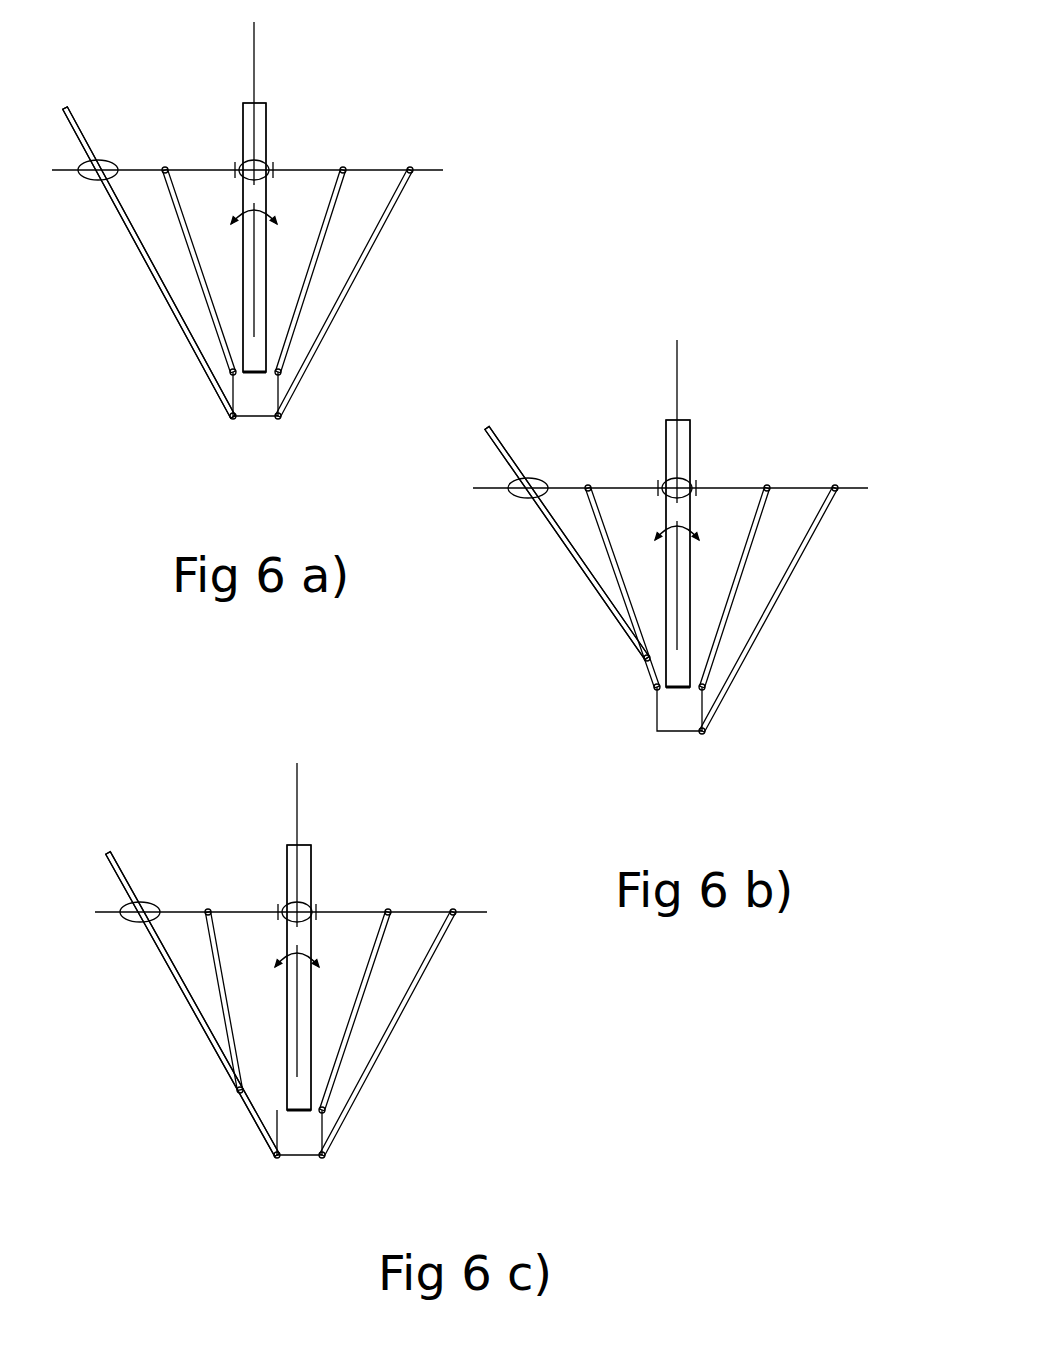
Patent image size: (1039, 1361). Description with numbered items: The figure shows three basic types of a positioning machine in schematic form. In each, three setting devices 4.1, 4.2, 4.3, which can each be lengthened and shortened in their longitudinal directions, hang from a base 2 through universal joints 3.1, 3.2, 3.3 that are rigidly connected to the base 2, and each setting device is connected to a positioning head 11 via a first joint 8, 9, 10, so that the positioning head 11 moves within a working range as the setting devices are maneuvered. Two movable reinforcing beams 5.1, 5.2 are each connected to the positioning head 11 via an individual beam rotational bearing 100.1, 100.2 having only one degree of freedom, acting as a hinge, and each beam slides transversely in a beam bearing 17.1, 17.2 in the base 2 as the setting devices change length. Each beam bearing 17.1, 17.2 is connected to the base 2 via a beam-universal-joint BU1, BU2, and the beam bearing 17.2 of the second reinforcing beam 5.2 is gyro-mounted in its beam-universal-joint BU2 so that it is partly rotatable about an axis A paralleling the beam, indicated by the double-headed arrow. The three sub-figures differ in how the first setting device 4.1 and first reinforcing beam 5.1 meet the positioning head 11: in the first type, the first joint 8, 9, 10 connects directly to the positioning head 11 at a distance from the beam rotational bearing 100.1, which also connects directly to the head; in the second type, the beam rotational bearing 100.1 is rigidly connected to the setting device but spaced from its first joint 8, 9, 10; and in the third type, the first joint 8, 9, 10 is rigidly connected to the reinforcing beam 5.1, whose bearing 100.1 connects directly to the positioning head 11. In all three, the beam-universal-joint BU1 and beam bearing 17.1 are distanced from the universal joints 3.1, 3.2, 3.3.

In FIG. 6a, the axis A is at (254, 53).
In FIG. 6b, the axis A is at (680, 370).
In FIG. 6c, the axis A is at (298, 793).
In FIG. 6a, the base 2 is at (435, 165).
In FIG. 6b, the base 2 is at (855, 490).
In FIG. 6c, the base 2 is at (477, 907).
In FIG. 6a, the universal joint 3.1 is at (162, 168).
In FIG. 6b, the universal joint 3.1 is at (585, 486).
In FIG. 6c, the universal joint 3.1 is at (205, 910).
In FIG. 6a, the universal joint 3.2 is at (343, 167).
In FIG. 6b, the universal joint 3.2 is at (767, 485).
In FIG. 6c, the universal joint 3.2 is at (388, 909).
In FIG. 6a, the universal joint 3.3 is at (411, 167).
In FIG. 6b, the universal joint 3.3 is at (836, 485).
In FIG. 6c, the universal joint 3.3 is at (454, 909).
In FIG. 6a, the first setting device 4.1 is at (187, 245).
In FIG. 6b, the first setting device 4.1 is at (612, 562).
In FIG. 6c, the first setting device 4.1 is at (222, 990).
In FIG. 6a, the second setting device 4.2 is at (327, 217).
In FIG. 6b, the second setting device 4.2 is at (755, 537).
In FIG. 6c, the second setting device 4.2 is at (373, 958).
In FIG. 6a, the third setting device 4.3 is at (348, 292).
In FIG. 6b, the third setting device 4.3 is at (773, 607).
In FIG. 6c, the third setting device 4.3 is at (392, 1030).
In FIG. 6a, the first reinforcing beam 5.1 is at (125, 220).
In FIG. 6b, the first reinforcing beam 5.1 is at (557, 533).
In FIG. 6c, the first reinforcing beam 5.1 is at (167, 963).
In FIG. 6a, the second reinforcing beam 5.2 is at (255, 132).
In FIG. 6b, the second reinforcing beam 5.2 is at (682, 448).
In FIG. 6c, the second reinforcing beam 5.2 is at (300, 873).
In FIG. 6a, the first joint 8 is at (258, 405).
In FIG. 6b, the first joint 8 is at (680, 718).
In FIG. 6c, the first joint 8 is at (301, 1137).
In FIG. 6a, the first joint 9 is at (258, 405).
In FIG. 6b, the first joint 9 is at (680, 718).
In FIG. 6c, the first joint 9 is at (301, 1137).
In FIG. 6a, the first joint 10 is at (233, 373).
In FIG. 6b, the first joint 10 is at (657, 688).
In FIG. 6c, the first joint 10 is at (238, 1093).
In FIG. 6a, the positioning head 11 is at (260, 407).
In FIG. 6b, the positioning head 11 is at (685, 720).
In FIG. 6c, the positioning head 11 is at (305, 1145).
In FIG. 6a, the beam bearing 17.1 is at (92, 182).
In FIG. 6b, the beam bearing 17.1 is at (527, 502).
In FIG. 6c, the beam bearing 17.1 is at (142, 925).
In FIG. 6a, the beam bearing 17.2 is at (237, 163).
In FIG. 6b, the beam bearing 17.2 is at (660, 482).
In FIG. 6c, the beam bearing 17.2 is at (280, 907).
In FIG. 6a, the beam rotational bearing 100.1 is at (233, 418).
In FIG. 6b, the beam rotational bearing 100.1 is at (645, 660).
In FIG. 6c, the beam rotational bearing 100.1 is at (276, 1157).
In FIG. 6a, the beam rotational bearing 100.2 is at (255, 375).
In FIG. 6b, the beam rotational bearing 100.2 is at (682, 688).
In FIG. 6c, the beam rotational bearing 100.2 is at (302, 1113).
In FIG. 6a, the beam-universal-joint BU1 is at (113, 177).
In FIG. 6b, the beam-universal-joint BU1 is at (538, 500).
In FIG. 6c, the beam-universal-joint BU1 is at (158, 922).
In FIG. 6a, the beam-universal-joint BU2 is at (250, 160).
In FIG. 6b, the beam-universal-joint BU2 is at (672, 475).
In FIG. 6c, the beam-universal-joint BU2 is at (293, 902).